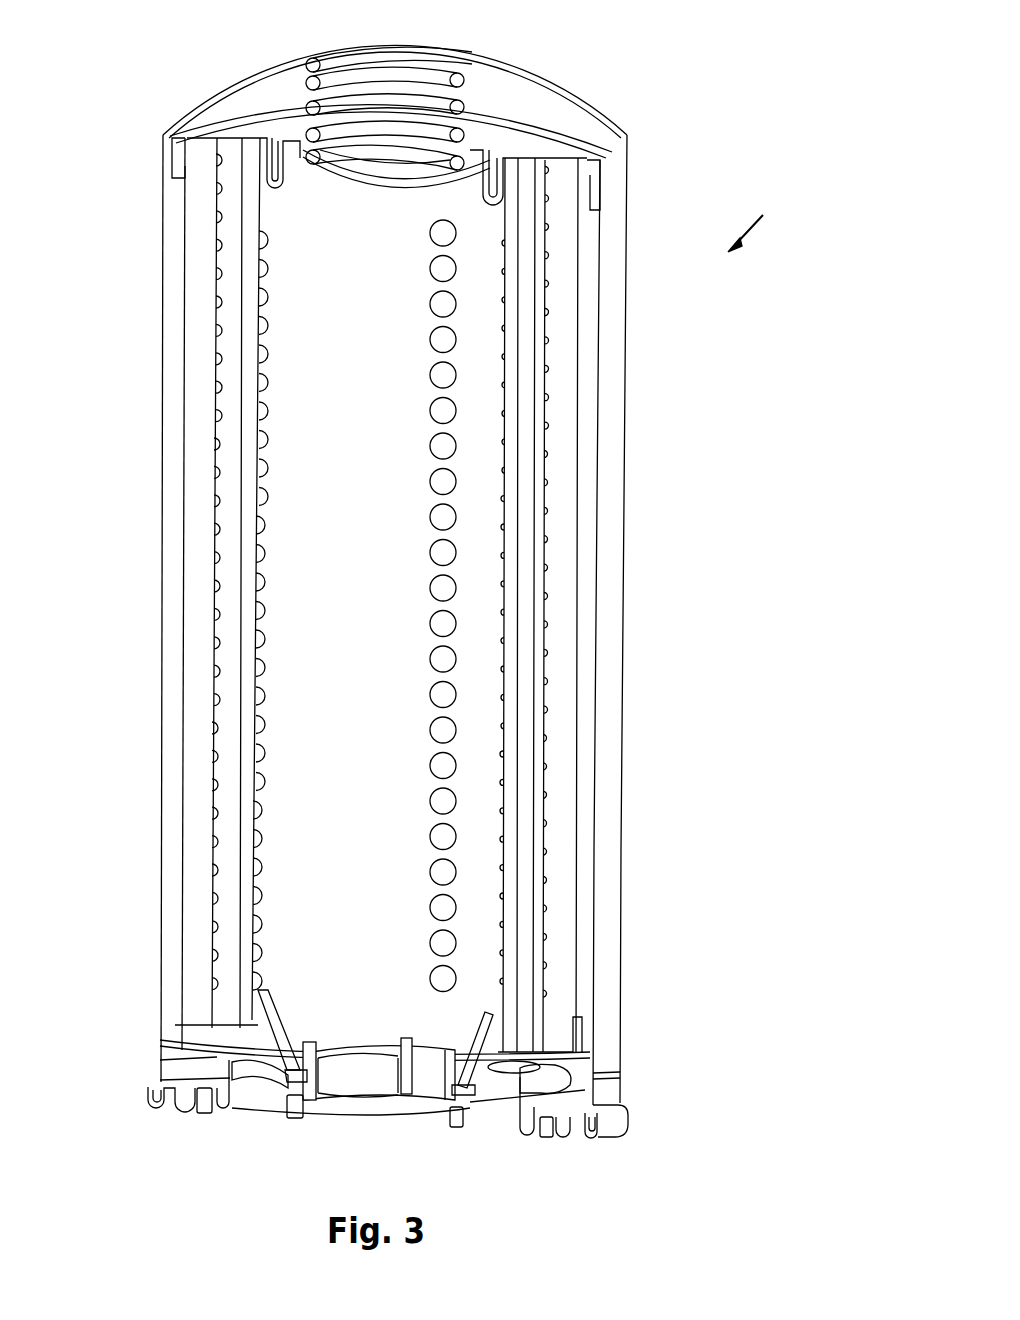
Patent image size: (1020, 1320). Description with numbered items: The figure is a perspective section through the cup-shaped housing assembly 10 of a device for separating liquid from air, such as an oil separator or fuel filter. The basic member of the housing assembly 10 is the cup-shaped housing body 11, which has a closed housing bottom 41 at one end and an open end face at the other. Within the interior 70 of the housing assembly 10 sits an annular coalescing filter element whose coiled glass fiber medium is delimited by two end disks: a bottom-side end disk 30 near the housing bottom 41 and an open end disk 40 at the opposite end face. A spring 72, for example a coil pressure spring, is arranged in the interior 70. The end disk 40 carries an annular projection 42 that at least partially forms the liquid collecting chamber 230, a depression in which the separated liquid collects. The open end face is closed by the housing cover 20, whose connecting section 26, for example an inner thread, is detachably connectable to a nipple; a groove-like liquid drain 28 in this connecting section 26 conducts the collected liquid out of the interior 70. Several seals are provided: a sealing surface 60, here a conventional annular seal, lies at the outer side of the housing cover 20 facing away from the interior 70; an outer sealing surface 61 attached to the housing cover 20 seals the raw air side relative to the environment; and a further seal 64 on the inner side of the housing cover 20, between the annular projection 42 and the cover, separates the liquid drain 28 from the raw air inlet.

The cup-shaped housing assembly 10 is at (781, 212).
The cup-shaped housing body 11 is at (617, 508).
The housing cover 20 is at (605, 1096).
The connecting section 26 is at (372, 1086).
The liquid drain 28 is at (320, 1070).
The bottom-side end disk 30 is at (513, 160).
The end disk 40 is at (587, 1032).
The housing bottom 41 is at (523, 90).
The annular projection 42 is at (458, 1078).
The sealing surface 60 is at (318, 1112).
The outer sealing surface 61 is at (200, 1113).
The seal 64 is at (288, 1082).
The interior 70 is at (258, 90).
The spring 72 is at (443, 83).
The liquid collecting chamber 230 is at (286, 1040).